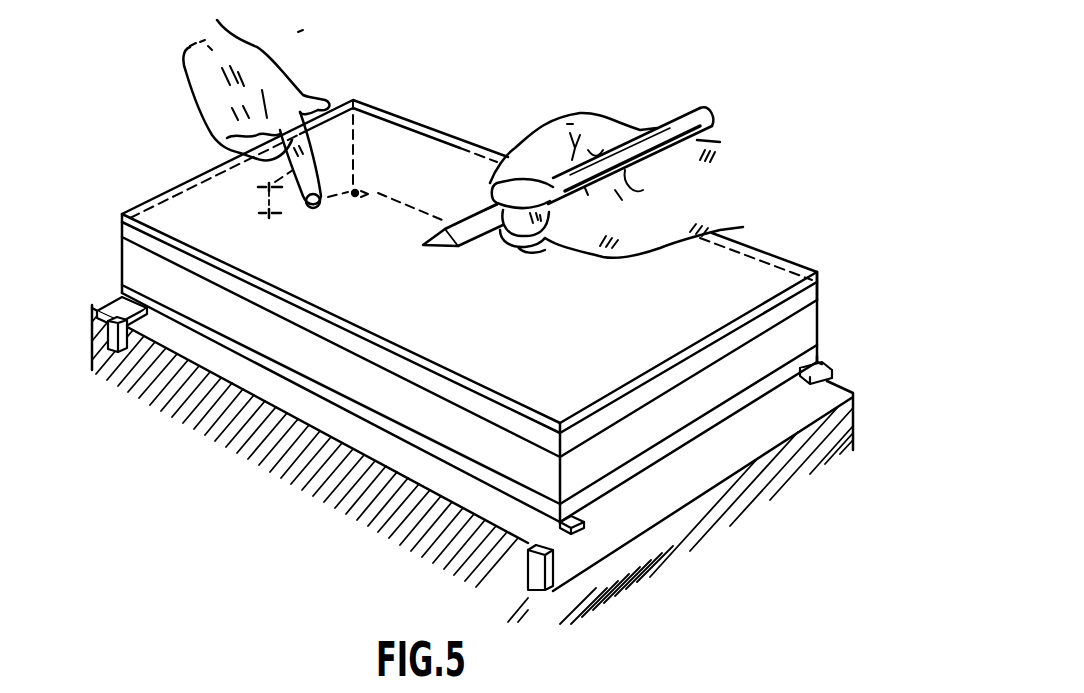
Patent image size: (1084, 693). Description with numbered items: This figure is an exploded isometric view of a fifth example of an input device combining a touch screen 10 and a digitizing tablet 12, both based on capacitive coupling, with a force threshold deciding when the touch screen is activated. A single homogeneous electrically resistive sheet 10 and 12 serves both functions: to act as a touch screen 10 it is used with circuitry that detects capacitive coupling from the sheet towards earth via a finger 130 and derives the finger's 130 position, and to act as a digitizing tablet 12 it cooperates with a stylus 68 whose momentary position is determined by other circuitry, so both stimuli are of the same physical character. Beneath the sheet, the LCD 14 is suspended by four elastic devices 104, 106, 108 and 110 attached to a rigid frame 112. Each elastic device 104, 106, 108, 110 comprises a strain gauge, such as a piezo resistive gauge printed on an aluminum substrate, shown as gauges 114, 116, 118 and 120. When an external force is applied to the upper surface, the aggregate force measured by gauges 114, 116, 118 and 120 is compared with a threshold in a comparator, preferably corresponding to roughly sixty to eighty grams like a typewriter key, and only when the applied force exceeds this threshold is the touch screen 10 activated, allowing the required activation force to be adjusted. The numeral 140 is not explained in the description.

The touch screen 10 is at (445, 266).
The digitizing tablet 12 is at (122, 212).
The LCD 14 is at (111, 211).
The stylus 68 is at (671, 130).
The elastic device 104 is at (145, 322).
The elastic device 106 is at (567, 563).
The elastic device 108 is at (820, 362).
The elastic device 110 is at (372, 190).
The rigid frame 112 is at (372, 492).
The strain gauge 114 is at (102, 306).
The strain gauge 116 is at (578, 538).
The strain gauge 118 is at (815, 384).
The strain gauge 120 is at (366, 188).
The finger 130 is at (301, 212).
The panel edge 140 is at (812, 297).